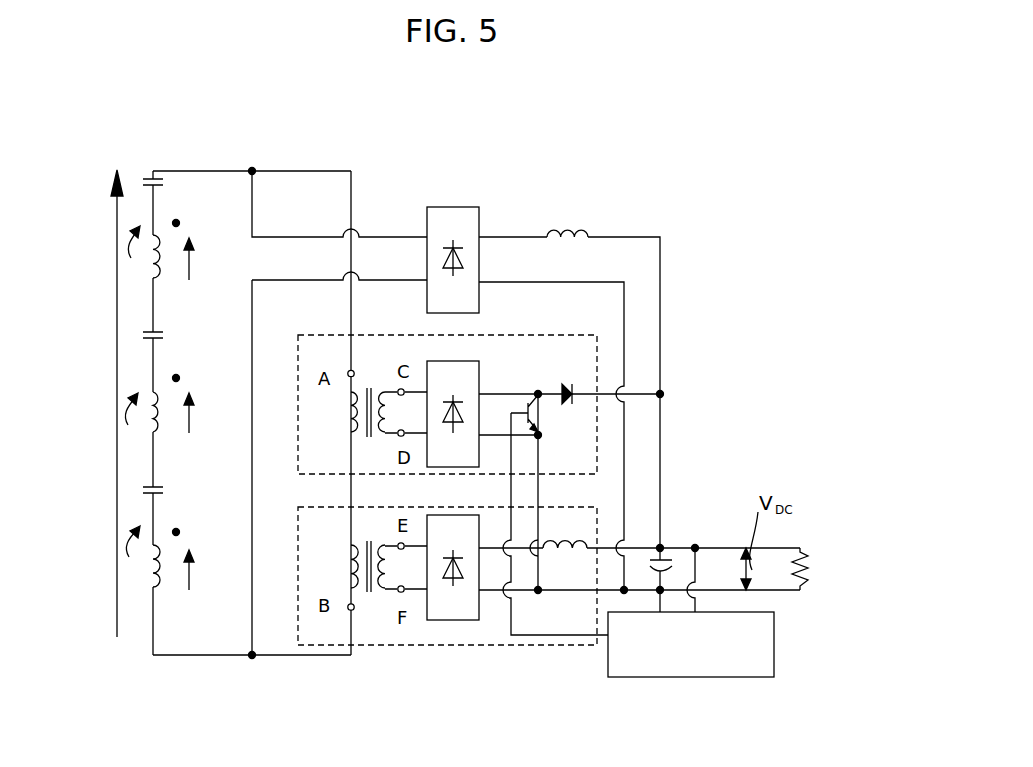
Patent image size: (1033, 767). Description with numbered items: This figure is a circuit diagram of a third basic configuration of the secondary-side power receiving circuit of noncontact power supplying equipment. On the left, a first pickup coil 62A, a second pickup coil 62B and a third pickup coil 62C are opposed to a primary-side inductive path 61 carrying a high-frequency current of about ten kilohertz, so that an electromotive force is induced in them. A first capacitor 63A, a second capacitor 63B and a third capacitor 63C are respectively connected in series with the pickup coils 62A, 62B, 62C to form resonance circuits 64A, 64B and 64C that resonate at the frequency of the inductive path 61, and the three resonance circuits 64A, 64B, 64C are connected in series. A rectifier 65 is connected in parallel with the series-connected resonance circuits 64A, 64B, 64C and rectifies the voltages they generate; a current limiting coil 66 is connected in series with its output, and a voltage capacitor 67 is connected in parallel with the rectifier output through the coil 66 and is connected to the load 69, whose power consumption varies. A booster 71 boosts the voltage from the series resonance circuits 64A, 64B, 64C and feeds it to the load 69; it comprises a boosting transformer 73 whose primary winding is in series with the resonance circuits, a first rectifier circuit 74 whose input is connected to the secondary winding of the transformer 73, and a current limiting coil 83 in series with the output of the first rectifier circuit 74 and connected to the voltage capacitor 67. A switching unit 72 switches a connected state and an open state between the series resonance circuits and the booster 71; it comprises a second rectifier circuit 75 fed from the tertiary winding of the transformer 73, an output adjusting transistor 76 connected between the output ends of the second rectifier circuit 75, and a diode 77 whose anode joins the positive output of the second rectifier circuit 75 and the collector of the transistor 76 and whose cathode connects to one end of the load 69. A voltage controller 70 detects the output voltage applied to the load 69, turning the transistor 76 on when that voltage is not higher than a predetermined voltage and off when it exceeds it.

The inductive path 61 is at (115, 337).
The first pickup coil 62A is at (163, 278).
The second pickup coil 62B is at (163, 432).
The third pickup coil 62C is at (163, 587).
The first capacitor 63A is at (163, 187).
The second capacitor 63B is at (163, 340).
The third capacitor 63C is at (163, 493).
The resonance circuit 64A is at (138, 253).
The resonance circuit 64B is at (137, 421).
The resonance circuit 64C is at (135, 557).
The rectifier 65 is at (453, 207).
The current limiting coil 66 is at (568, 225).
The voltage capacitor 67 is at (675, 560).
The load 69 is at (808, 570).
The voltage controller 70 is at (730, 677).
The booster 71 is at (390, 645).
The switching unit 72 is at (550, 337).
The boosting transformer 73 is at (370, 437).
The first rectifier circuit 74 is at (452, 620).
The second rectifier circuit 75 is at (453, 361).
The output adjusting transistor 76 is at (525, 400).
The diode 77 is at (575, 385).
The current limiting coil 83 is at (565, 535).